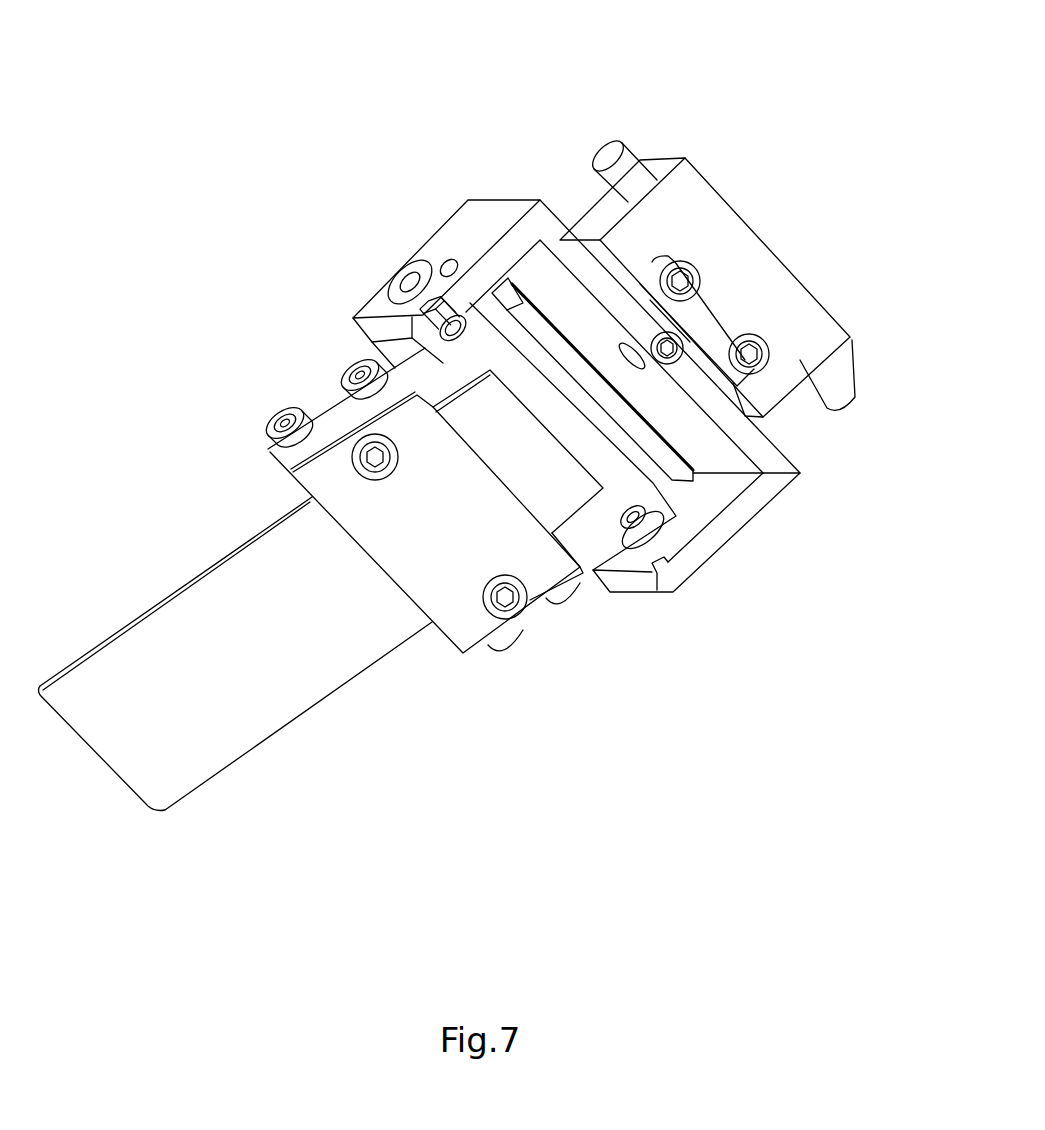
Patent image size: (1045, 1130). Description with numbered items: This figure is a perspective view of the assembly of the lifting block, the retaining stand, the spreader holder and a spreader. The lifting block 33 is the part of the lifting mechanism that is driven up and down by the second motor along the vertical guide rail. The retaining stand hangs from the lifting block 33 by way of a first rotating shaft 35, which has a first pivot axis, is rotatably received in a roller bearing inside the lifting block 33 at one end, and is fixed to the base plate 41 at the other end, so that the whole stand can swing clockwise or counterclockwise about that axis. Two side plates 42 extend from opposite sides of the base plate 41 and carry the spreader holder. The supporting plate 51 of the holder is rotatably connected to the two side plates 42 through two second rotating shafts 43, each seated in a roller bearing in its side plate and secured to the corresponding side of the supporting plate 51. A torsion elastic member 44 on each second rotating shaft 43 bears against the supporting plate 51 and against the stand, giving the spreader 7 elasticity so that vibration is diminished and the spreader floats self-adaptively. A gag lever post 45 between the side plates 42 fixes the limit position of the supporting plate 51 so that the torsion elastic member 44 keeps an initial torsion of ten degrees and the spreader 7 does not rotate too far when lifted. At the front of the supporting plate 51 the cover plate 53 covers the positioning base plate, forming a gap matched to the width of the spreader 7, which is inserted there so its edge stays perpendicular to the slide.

The spreader 7 is at (238, 677).
The lifting block 33 is at (723, 235).
The first rotating shaft 35 is at (623, 250).
The base plate 41 is at (725, 397).
The side plates 42 is at (472, 218).
The second rotating shafts 43 is at (400, 278).
The torsion elastic member 44 is at (650, 518).
The gag lever post 45 is at (632, 455).
The supporting plate 51 is at (592, 520).
The cover plate 53 is at (460, 556).